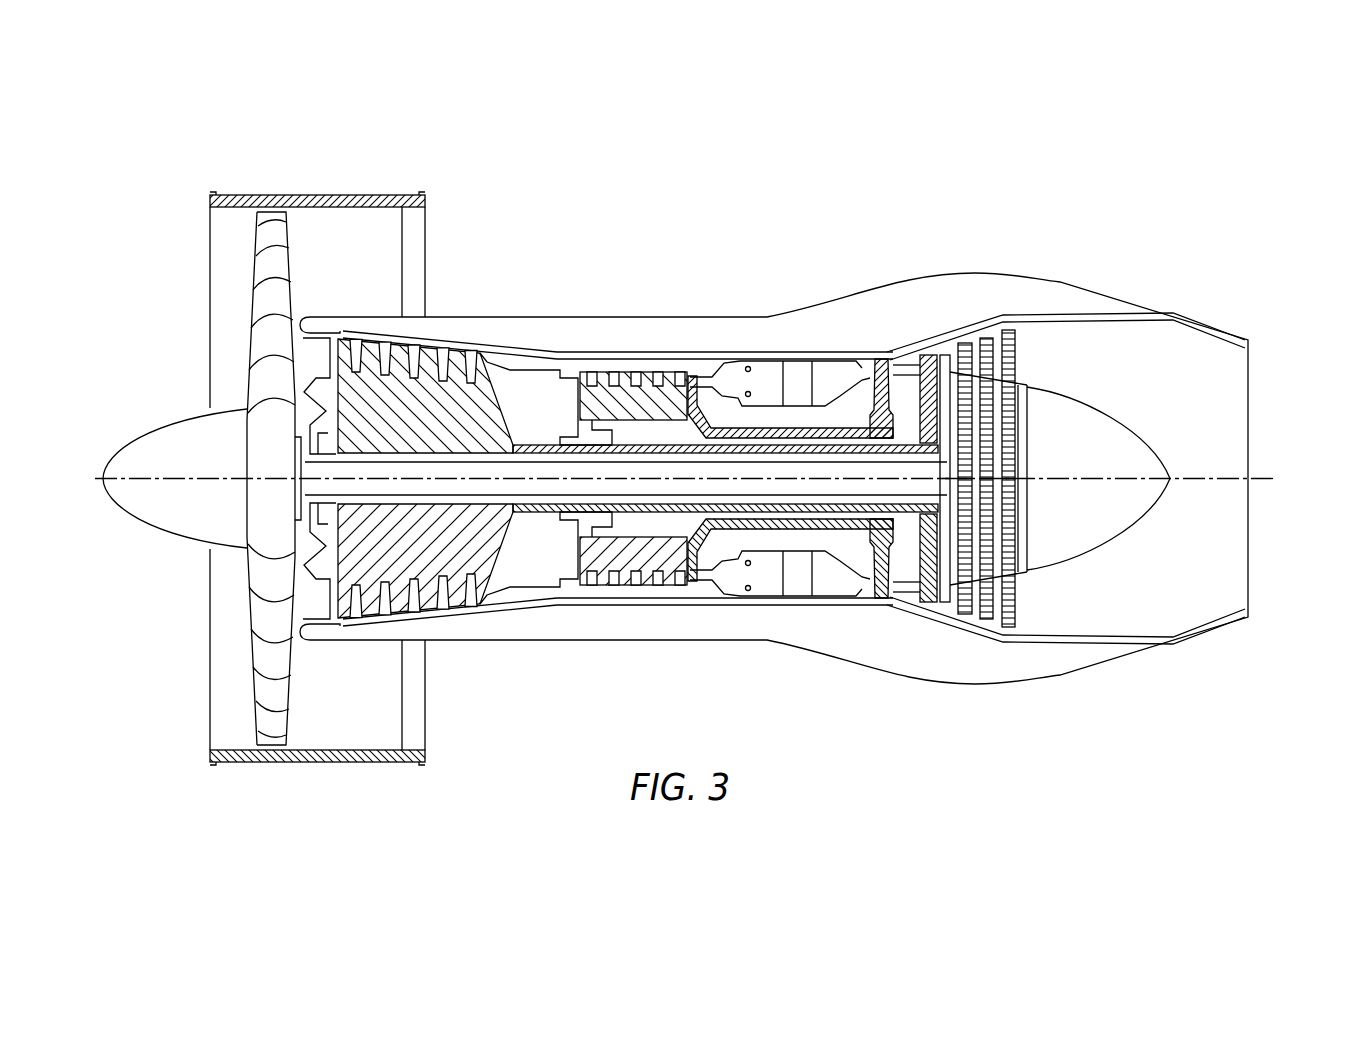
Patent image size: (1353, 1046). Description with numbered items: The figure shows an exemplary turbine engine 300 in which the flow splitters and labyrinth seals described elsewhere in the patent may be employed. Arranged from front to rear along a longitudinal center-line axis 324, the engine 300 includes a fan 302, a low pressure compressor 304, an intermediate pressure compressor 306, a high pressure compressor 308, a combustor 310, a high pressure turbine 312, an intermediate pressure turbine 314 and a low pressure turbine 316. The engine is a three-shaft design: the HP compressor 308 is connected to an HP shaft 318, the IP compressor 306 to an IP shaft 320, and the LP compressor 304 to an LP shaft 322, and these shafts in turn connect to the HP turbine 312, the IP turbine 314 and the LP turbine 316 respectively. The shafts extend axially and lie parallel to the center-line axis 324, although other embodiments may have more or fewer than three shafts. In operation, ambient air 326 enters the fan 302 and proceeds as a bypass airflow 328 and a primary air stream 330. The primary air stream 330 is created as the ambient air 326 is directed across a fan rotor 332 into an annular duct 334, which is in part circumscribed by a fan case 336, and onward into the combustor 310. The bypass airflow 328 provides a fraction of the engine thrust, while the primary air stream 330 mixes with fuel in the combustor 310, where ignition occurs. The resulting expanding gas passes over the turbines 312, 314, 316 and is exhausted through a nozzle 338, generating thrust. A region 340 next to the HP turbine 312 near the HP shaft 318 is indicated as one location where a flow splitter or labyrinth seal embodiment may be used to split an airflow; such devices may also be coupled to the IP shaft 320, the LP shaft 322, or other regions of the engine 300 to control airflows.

The turbine engine 300 is at (917, 98).
The fan 302 is at (238, 321).
The low pressure compressor 304 is at (273, 726).
The intermediate pressure compressor 306 is at (462, 400).
The high pressure compressor 308 is at (640, 556).
The combustor 310 is at (762, 372).
The high pressure turbine 312 is at (880, 374).
The intermediate pressure turbine 314 is at (930, 362).
The low pressure turbine 316 is at (1016, 340).
The HP shaft 318 is at (796, 530).
The IP shaft 320 is at (905, 522).
The LP shaft 322 is at (940, 522).
The longitudinal center-line axis 324 is at (1265, 470).
The ambient air 326 is at (185, 247).
The bypass airflow 328 is at (355, 267).
The primary air stream 330 is at (580, 372).
The fan rotor 332 is at (235, 378).
The annular duct 334 is at (403, 710).
The fan case 336 is at (340, 762).
The nozzle 338 is at (1215, 328).
The region 340 is at (887, 522).